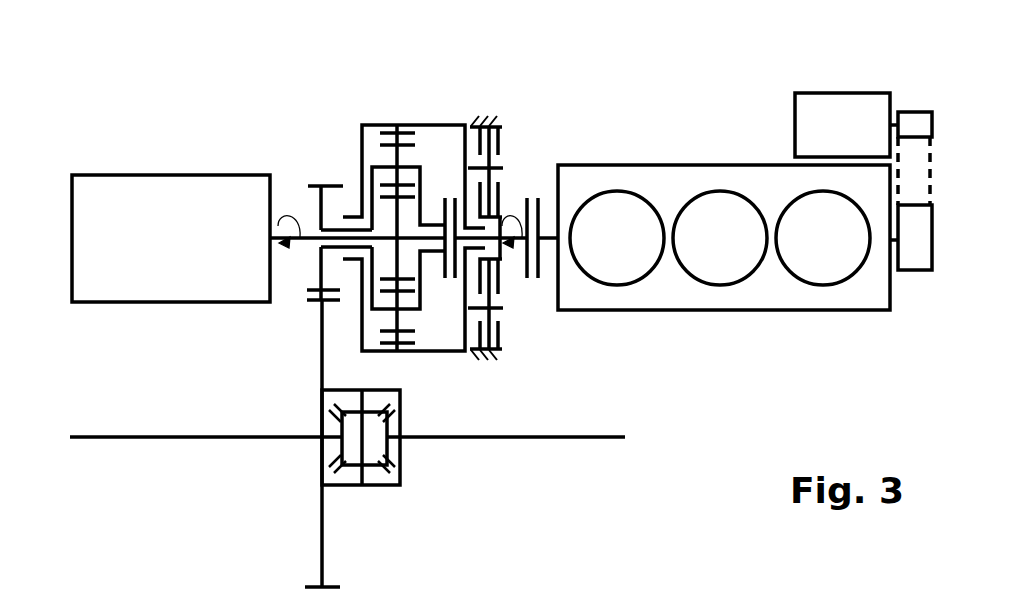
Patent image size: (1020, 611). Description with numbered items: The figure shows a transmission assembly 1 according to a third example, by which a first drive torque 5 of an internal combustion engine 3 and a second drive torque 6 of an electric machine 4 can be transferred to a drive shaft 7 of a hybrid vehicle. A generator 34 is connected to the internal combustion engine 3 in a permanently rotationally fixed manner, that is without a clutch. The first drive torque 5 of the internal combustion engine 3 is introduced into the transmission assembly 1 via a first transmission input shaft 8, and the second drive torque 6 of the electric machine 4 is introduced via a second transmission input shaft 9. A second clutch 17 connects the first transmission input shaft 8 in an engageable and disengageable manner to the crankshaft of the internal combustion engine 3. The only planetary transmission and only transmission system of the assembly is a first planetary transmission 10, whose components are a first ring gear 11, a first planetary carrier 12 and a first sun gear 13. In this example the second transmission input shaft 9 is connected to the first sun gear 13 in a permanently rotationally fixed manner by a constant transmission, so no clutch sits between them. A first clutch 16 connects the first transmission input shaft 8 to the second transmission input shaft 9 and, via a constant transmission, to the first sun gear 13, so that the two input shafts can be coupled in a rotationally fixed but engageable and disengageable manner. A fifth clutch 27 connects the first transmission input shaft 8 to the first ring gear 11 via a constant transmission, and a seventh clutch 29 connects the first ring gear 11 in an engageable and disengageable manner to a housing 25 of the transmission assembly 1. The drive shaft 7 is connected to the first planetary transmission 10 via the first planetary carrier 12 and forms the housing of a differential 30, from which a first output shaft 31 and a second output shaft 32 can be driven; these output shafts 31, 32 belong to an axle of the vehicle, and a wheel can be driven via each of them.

The transmission assembly 1 is at (590, 114).
The internal combustion engine 3 is at (685, 182).
The electric machine 4 is at (131, 204).
The first drive torque 5 is at (512, 250).
The second drive torque 6 is at (287, 250).
The drive shaft 7 is at (322, 525).
The first transmission input shaft 8 is at (500, 235).
The second transmission input shaft 9 is at (298, 242).
The first planetary transmission 10 is at (366, 78).
The first ring gear 11 is at (362, 156).
The first planetary carrier 12 is at (312, 296).
The first sun gear 13 is at (397, 270).
The first clutch 16 is at (445, 197).
The second clutch 17 is at (546, 285).
The housing 25 is at (483, 122).
The fifth clutch 27 is at (500, 302).
The seventh clutch 29 is at (497, 153).
The differential 30 is at (390, 486).
The first output shaft 31 is at (500, 440).
The second output shaft 32 is at (180, 437).
The generator 34 is at (832, 102).